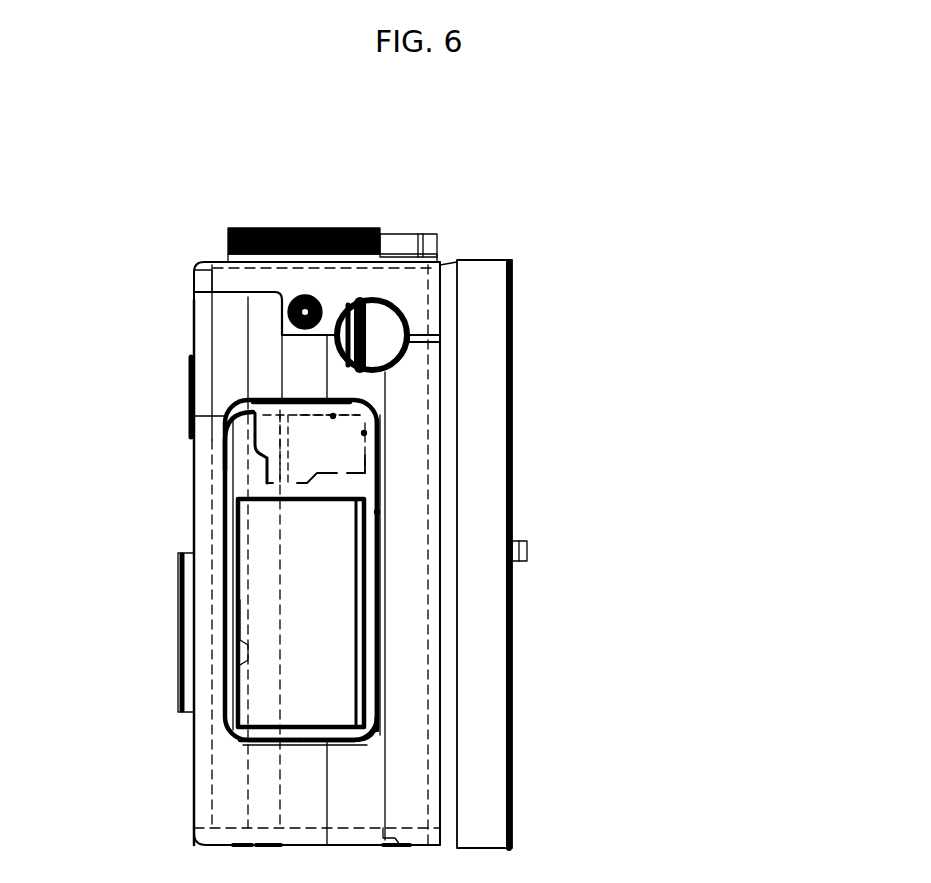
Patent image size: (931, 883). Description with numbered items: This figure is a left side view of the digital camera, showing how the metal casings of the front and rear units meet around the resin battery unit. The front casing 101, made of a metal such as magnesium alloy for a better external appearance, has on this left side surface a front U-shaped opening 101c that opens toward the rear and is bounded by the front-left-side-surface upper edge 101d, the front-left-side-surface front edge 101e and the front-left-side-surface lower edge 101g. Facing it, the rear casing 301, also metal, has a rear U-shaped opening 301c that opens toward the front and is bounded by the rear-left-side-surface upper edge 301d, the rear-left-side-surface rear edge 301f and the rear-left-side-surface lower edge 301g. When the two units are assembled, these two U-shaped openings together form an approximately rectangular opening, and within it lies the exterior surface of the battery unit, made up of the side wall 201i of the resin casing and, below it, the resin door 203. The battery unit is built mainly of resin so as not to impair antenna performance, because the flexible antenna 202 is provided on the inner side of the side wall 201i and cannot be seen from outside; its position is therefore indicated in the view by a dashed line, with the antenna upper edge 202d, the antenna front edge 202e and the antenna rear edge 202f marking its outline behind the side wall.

The front casing 101 is at (410, 755).
The front U-shaped opening 101c is at (762, 312).
The front-left-side-surface upper edge 101d is at (255, 412).
The front-left-side-surface front edge 101e is at (378, 512).
The front-left-side-surface lower edge 101g is at (367, 727).
The side wall 201i is at (350, 485).
The flexible antenna 202 is at (626, 350).
The antenna upper edge 202d is at (333, 416).
The antenna front edge 202e is at (366, 433).
The antenna rear edge 202f is at (256, 433).
The resin door 203 is at (323, 690).
The rear casing 301 is at (225, 325).
The rear U-shaped opening 301c is at (100, 427).
The rear-left-side-surface upper edge 301d is at (238, 414).
The rear-left-side-surface rear edge 301f is at (230, 443).
The rear-left-side-surface lower edge 301g is at (293, 727).